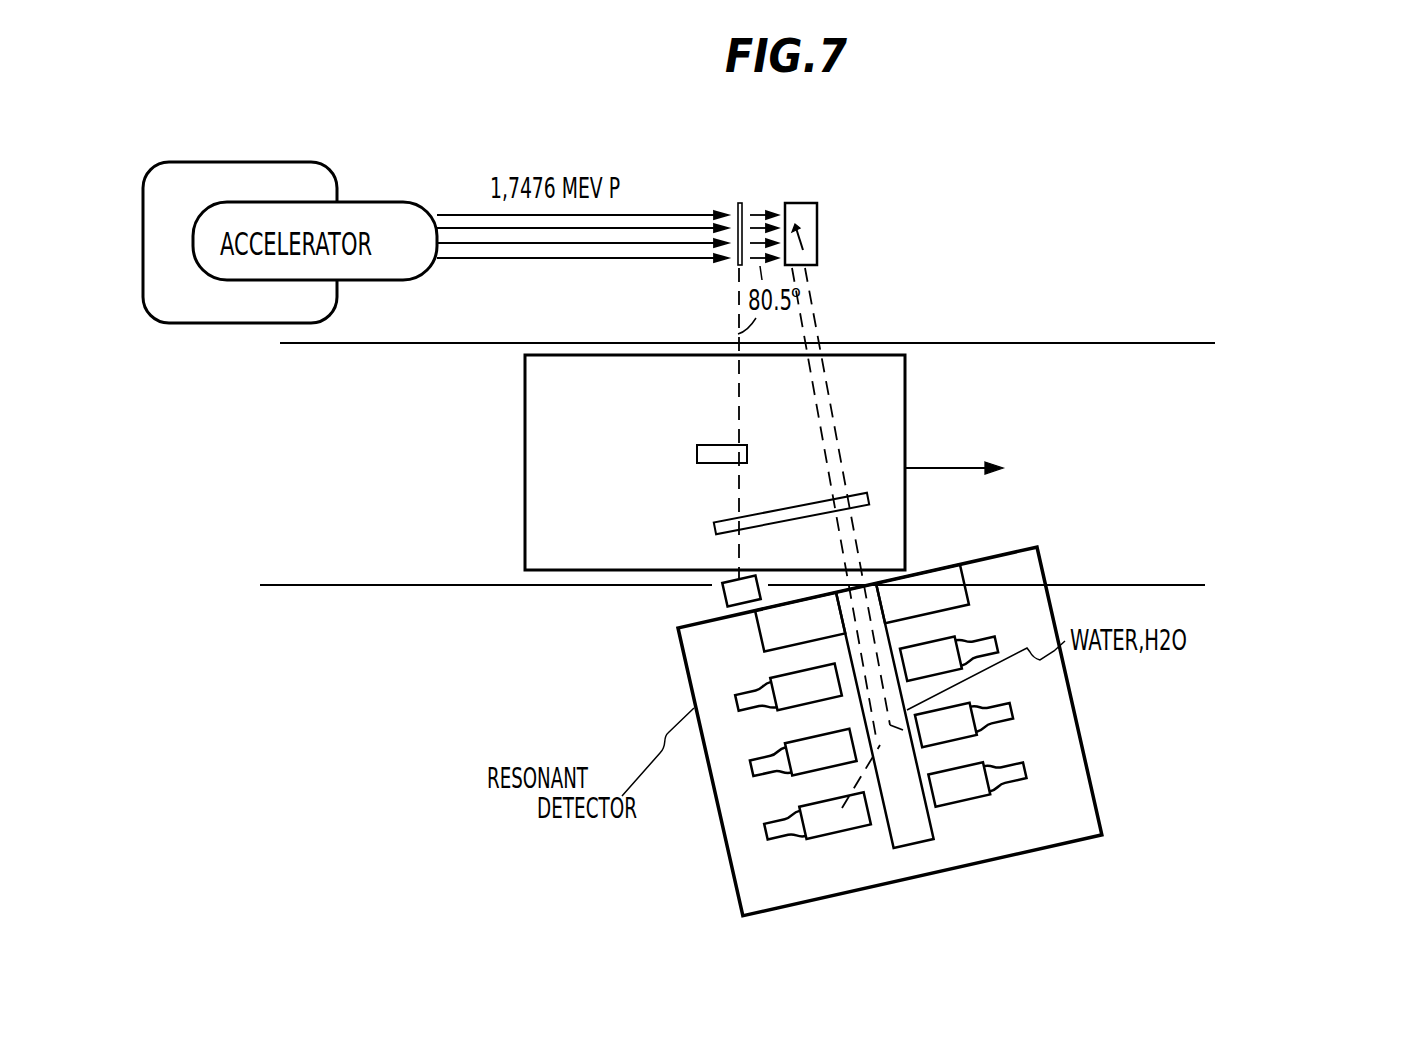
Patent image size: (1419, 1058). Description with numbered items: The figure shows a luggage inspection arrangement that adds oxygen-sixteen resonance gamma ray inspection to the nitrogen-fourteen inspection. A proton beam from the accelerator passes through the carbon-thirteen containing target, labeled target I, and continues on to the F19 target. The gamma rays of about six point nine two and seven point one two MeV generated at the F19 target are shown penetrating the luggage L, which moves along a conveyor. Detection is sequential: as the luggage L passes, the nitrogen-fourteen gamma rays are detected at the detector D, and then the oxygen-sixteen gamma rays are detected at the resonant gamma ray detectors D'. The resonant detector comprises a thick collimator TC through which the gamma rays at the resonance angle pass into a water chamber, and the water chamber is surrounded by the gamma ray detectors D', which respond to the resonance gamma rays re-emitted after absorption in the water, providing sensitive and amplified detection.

The C13 target I is at (737, 203).
The 19F target F19 is at (811, 229).
The luggage L is at (905, 421).
The detector D is at (629, 632).
The thick collimator TC is at (1008, 582).
The resonant gamma ray detectors D' is at (1067, 737).